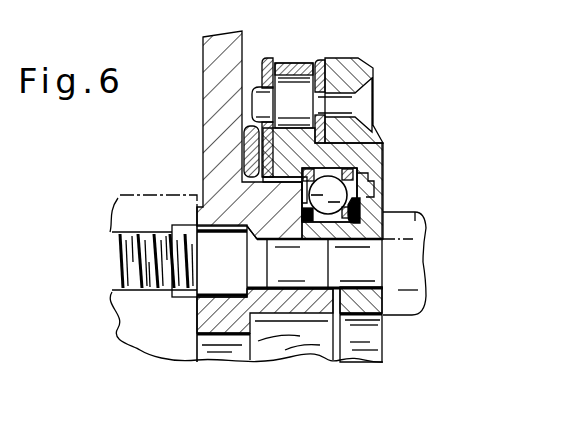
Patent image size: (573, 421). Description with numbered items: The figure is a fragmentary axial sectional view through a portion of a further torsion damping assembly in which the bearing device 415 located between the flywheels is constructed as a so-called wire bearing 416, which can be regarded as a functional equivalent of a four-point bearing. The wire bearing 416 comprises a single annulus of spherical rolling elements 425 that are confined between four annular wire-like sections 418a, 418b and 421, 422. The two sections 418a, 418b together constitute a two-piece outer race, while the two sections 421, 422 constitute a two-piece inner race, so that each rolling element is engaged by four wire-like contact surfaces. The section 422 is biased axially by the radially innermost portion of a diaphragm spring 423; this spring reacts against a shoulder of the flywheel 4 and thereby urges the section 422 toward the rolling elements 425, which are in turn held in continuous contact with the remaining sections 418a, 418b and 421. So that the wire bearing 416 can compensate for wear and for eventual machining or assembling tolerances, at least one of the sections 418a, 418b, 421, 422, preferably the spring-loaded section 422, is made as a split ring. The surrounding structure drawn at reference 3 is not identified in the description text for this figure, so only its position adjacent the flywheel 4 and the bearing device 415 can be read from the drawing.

The housing 3 is at (368, 128).
The flywheel 4 is at (207, 78).
The bearing device 415 is at (292, 270).
The wire bearing 416 is at (358, 198).
The annular wire-like section 418a is at (252, 157).
The annular wire-like section 418b is at (360, 172).
The annular wire-like section 421 is at (280, 180).
The annular wire-like section 422 is at (355, 220).
The diaphragm spring 423 is at (354, 200).
The spherical rolling elements 425 is at (263, 192).